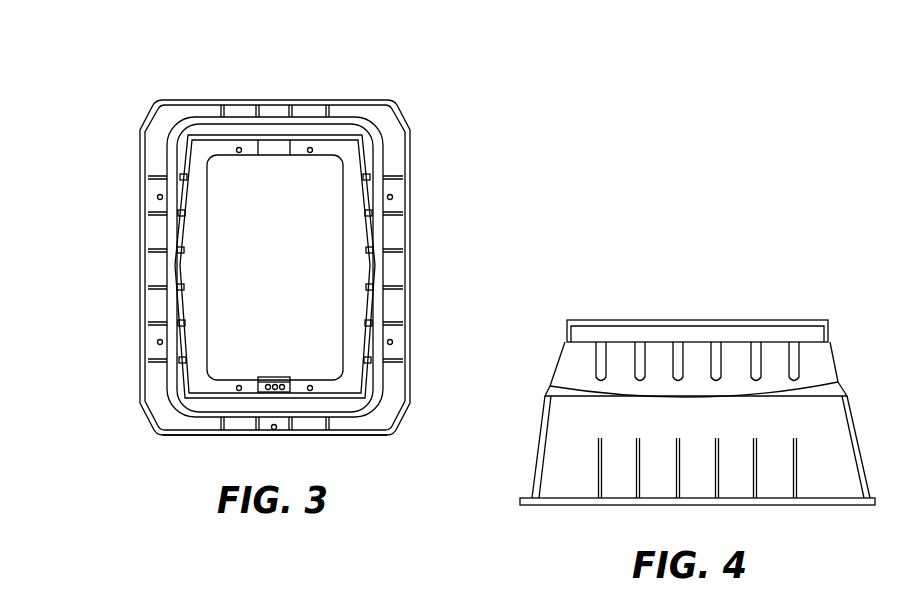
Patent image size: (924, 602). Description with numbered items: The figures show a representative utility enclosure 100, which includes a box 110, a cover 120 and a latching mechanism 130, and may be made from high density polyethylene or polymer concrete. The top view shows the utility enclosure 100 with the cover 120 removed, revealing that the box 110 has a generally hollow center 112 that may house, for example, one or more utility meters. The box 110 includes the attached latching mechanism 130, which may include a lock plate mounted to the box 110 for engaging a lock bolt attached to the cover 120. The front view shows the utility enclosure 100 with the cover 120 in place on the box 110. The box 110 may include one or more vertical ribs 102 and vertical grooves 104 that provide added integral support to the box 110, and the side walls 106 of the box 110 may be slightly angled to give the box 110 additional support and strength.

In FIG. 3, the utility enclosure 100 is at (452, 113).
In FIG. 4, the utility enclosure 100 is at (832, 278).
In FIG. 3, the vertical ribs 102 is at (160, 362).
In FIG. 4, the vertical ribs 102 is at (800, 465).
In FIG. 3, the vertical grooves 104 is at (181, 212).
In FIG. 4, the vertical grooves 104 is at (795, 353).
In FIG. 4, the side walls 106 is at (850, 400).
In FIG. 3, the box 110 is at (355, 437).
In FIG. 4, the box 110 is at (548, 427).
In FIG. 3, the hollow center 112 is at (284, 268).
In FIG. 4, the cover 120 is at (645, 322).
In FIG. 3, the latching mechanism 130 is at (282, 378).